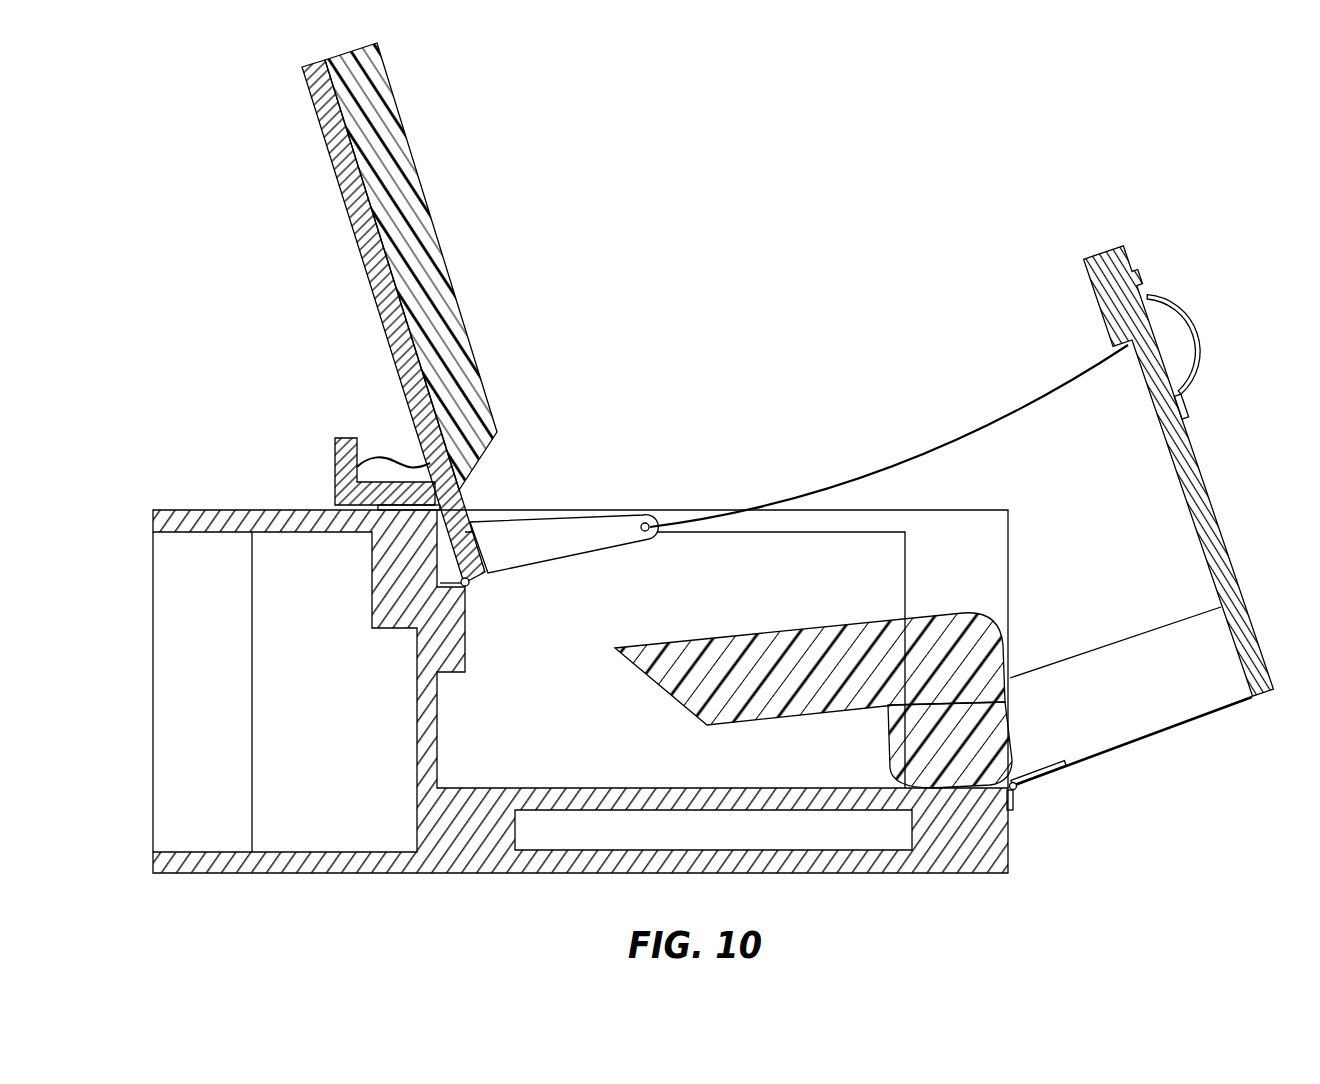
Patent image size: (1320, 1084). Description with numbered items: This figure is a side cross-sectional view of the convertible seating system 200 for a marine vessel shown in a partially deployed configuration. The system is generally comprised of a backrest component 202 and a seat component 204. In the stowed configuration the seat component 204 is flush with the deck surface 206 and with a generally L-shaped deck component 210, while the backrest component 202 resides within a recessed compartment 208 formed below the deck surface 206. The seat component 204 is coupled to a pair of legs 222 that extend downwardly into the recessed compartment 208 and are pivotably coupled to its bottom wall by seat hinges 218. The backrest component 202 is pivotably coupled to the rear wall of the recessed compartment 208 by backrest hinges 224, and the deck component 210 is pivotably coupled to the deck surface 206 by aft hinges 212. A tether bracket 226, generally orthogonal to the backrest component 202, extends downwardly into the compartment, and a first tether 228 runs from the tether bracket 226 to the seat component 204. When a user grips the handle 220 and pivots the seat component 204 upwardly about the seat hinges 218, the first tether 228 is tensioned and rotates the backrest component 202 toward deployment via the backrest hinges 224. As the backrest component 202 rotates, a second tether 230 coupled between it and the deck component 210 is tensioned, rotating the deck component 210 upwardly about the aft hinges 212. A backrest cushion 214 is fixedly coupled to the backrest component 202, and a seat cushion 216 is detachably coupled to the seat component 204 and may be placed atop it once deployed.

The convertible seating system 200 is at (210, 100).
The backrest component 202 is at (343, 173).
The seat component 204 is at (1198, 460).
The deck surface 206 is at (198, 514).
The recessed compartment 208 is at (548, 742).
The deck component 210 is at (334, 470).
The aft hinges 212 is at (403, 512).
The backrest cushion 214 is at (398, 178).
The seat cushion 216 is at (968, 632).
The seat hinges 218 is at (1040, 783).
The handle 220 is at (1188, 328).
The legs 222 is at (1152, 680).
The backrest hinges 224 is at (470, 585).
The tether bracket 226 is at (557, 540).
The first tether 228 is at (917, 452).
The second tether 230 is at (390, 461).